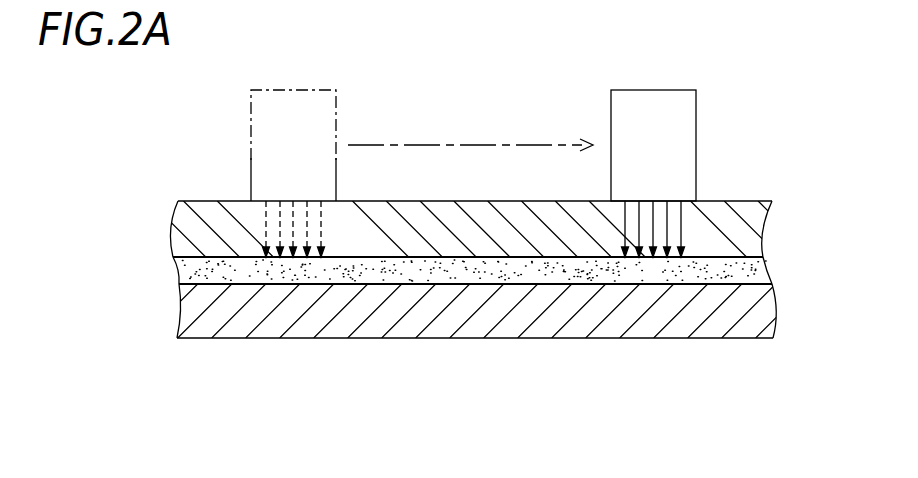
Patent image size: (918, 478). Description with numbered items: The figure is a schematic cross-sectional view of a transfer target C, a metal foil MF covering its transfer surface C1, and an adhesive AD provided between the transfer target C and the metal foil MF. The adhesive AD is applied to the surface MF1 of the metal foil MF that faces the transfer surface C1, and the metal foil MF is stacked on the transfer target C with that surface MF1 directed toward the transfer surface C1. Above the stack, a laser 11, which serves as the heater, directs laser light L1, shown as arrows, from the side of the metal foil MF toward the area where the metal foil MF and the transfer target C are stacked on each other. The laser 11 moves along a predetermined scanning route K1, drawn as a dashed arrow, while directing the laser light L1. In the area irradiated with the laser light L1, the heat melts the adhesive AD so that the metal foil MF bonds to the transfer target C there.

The laser 11 is at (251, 115).
The scanning route K1 is at (441, 146).
The laser light L1 is at (266, 213).
The metal foil MF is at (778, 238).
The adhesive AD is at (778, 275).
The transfer target C is at (790, 315).
The surface of the metal foil MF1 is at (183, 258).
The transfer surface C1 is at (212, 284).